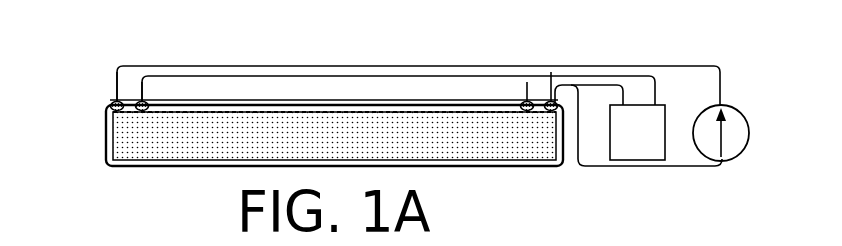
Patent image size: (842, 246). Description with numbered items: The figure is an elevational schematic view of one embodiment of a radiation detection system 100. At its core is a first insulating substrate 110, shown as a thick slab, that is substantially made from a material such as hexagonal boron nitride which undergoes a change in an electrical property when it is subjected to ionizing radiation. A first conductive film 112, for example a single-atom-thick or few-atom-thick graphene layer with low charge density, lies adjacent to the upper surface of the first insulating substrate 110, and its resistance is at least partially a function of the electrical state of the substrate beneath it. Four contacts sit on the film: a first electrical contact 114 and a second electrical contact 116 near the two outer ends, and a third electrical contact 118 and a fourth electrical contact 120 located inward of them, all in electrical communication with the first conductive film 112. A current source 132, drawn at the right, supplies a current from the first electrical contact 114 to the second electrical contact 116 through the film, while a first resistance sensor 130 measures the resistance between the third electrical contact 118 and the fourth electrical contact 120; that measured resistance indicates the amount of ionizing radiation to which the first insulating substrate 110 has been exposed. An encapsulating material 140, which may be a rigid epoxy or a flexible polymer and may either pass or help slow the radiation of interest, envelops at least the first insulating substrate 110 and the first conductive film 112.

The radiation detection system 100 is at (100, 56).
The first insulating substrate 110 is at (177, 154).
The first conductive film 112 is at (283, 111).
The first electrical contact 114 is at (112, 104).
The second electrical contact 116 is at (549, 104).
The third electrical contact 118 is at (147, 105).
The fourth electrical contact 120 is at (524, 104).
The first resistance sensor 130 is at (658, 104).
The current source 132 is at (725, 104).
The encapsulating material 140 is at (357, 100).